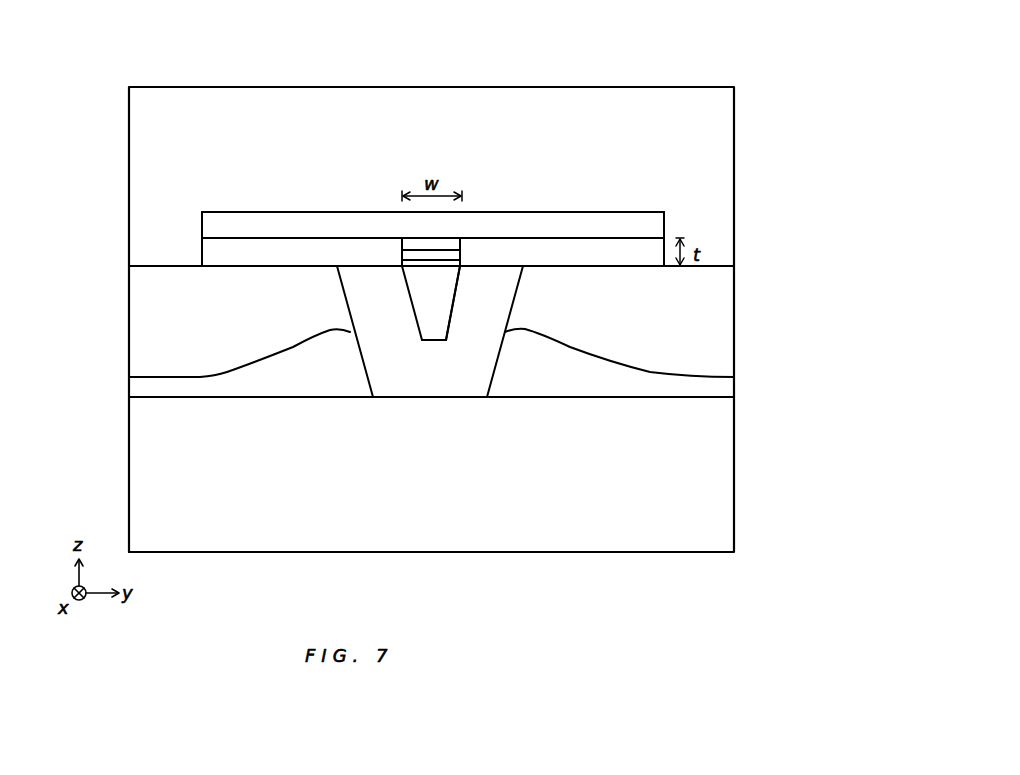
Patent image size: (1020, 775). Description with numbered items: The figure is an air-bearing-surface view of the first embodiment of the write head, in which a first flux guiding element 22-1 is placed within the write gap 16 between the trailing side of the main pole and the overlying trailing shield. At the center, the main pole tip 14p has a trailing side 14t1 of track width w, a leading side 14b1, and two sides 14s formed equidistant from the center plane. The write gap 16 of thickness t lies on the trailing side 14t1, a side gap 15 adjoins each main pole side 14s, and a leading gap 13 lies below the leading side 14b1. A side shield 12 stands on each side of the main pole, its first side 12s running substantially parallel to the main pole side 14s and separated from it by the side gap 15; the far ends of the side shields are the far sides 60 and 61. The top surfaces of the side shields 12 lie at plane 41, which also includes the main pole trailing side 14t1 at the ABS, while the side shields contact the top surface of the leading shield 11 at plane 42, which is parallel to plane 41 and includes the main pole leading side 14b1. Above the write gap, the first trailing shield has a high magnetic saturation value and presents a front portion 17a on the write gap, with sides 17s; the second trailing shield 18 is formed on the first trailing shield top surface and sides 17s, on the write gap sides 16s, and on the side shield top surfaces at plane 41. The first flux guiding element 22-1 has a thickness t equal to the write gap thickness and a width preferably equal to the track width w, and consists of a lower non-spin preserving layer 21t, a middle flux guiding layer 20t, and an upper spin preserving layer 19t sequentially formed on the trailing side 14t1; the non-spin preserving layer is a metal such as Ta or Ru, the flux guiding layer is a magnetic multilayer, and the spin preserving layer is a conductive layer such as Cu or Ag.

The leading shield 11 is at (143, 462).
The side shield 12 is at (143, 353).
The first side of side shield 12s is at (129, 377).
The leading gap 13 is at (388, 370).
The main pole tip 14p is at (423, 317).
The leading side of main pole 14b1 is at (437, 340).
The main pole side 14s is at (446, 335).
The trailing side of main pole 14t1 is at (410, 266).
The side gap 15 is at (373, 283).
The write gap 16 is at (230, 252).
The write gap side 16s is at (202, 253).
The front portion of first trailing shield 17a is at (260, 223).
The side of first trailing shield 17s is at (202, 224).
The second trailing shield 18 is at (723, 188).
The spin preserving layer 19t is at (460, 239).
The flux guiding layer 20t is at (460, 251).
The non-spin preserving layer 21t is at (460, 260).
The first flux guiding element 22-1 is at (634, 56).
The plane 41- 41 is at (129, 266).
The plane 42- 42 is at (129, 397).
The far side of side shield 60 is at (129, 320).
The far side of side shield 61 is at (734, 320).